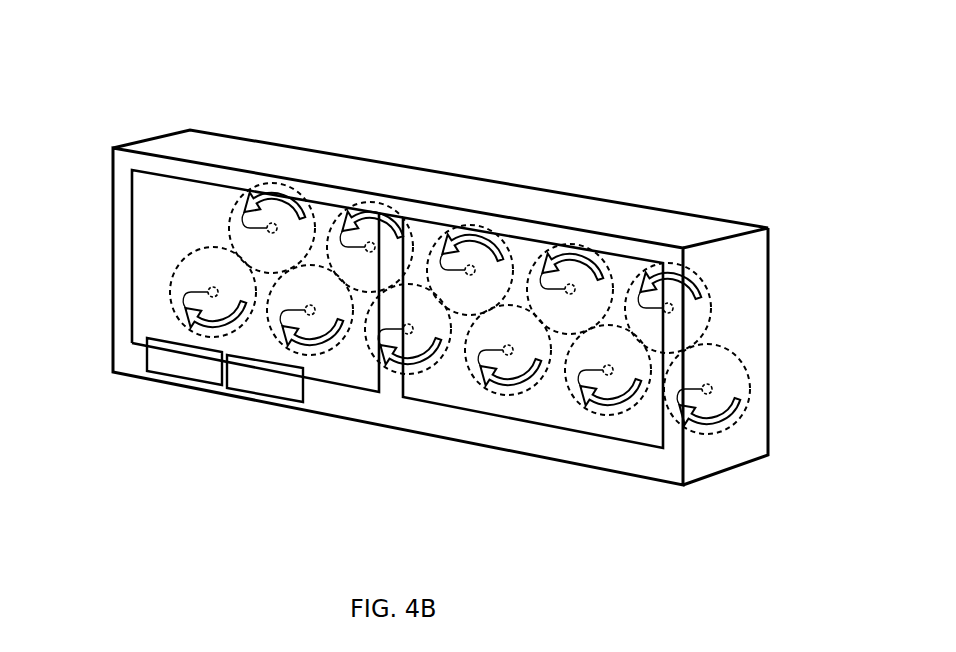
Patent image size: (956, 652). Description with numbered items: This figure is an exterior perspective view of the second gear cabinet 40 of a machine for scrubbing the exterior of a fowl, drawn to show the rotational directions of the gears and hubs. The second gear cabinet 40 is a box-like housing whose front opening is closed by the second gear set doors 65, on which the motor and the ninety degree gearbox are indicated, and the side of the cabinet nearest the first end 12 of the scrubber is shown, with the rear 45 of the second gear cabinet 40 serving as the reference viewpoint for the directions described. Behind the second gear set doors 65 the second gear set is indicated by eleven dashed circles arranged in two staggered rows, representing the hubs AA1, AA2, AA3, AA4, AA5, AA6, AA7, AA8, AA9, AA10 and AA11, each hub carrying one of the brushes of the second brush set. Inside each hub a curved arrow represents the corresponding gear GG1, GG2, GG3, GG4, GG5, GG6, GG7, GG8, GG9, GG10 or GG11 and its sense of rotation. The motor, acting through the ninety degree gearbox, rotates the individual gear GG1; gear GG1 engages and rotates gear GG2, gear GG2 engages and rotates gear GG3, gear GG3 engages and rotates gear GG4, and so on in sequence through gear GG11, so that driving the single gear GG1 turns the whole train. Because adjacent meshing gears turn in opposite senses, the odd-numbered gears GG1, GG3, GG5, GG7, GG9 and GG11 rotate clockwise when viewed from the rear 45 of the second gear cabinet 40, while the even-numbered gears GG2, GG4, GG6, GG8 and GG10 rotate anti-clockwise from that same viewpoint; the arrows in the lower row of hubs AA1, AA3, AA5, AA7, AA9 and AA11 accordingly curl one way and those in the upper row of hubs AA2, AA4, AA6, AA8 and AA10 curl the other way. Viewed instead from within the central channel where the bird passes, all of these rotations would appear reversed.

The second gear cabinet 40 is at (730, 98).
The first end 12 is at (677, 458).
The rear 45 is at (676, 470).
The second gear set doors 65 is at (443, 383).
The hub AA1 is at (664, 395).
The hub AA2 is at (636, 278).
The hub AA3 is at (575, 340).
The hub AA4 is at (538, 252).
The hub AA5 is at (462, 343).
The hub AA6 is at (440, 233).
The hub AA7 is at (376, 300).
The hub AA8 is at (350, 212).
The hub AA9 is at (268, 312).
The hub AA10 is at (247, 192).
The hub AA11 is at (172, 292).
The gear GG1 is at (676, 378).
The gear GG2 is at (655, 327).
The gear GG3 is at (582, 350).
The gear GG4 is at (590, 308).
The gear GG5 is at (525, 360).
The gear GG6 is at (495, 280).
The gear GG7 is at (380, 323).
The gear GG8 is at (363, 275).
The gear GG9 is at (288, 293).
The gear GG10 is at (295, 238).
The gear GG11 is at (198, 270).